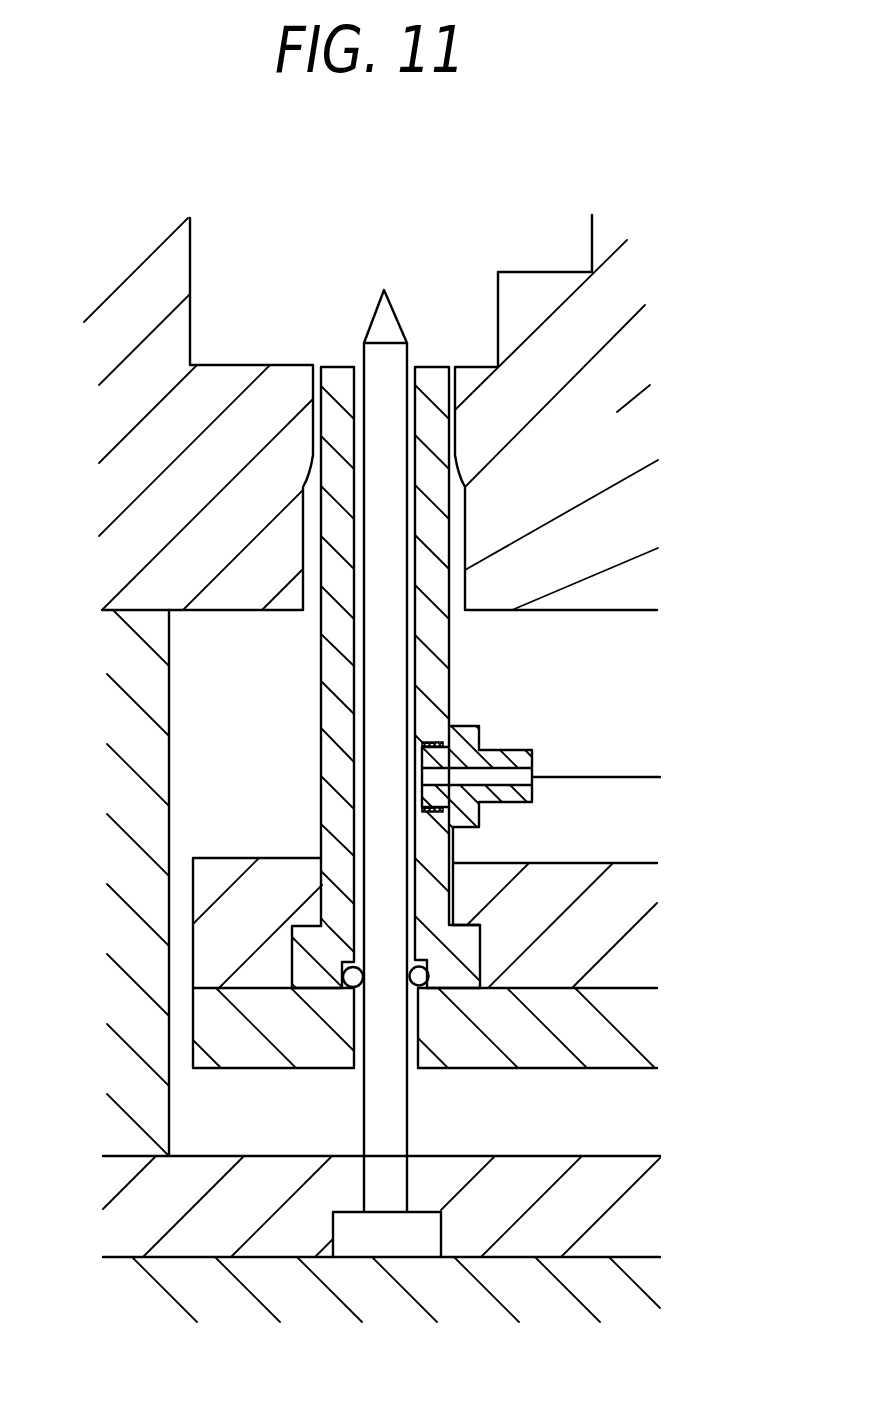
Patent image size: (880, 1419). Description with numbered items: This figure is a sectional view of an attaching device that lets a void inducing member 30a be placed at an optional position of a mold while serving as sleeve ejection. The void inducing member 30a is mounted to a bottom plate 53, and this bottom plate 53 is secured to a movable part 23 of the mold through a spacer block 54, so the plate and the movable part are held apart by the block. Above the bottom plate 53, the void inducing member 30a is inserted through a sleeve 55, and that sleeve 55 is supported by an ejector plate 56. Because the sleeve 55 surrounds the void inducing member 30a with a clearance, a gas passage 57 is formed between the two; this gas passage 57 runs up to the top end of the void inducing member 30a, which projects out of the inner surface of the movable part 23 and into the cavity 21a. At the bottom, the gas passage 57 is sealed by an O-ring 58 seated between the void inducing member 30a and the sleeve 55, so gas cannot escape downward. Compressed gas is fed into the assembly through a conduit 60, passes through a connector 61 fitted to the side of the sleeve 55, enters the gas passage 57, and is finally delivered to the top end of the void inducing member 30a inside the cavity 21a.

The cavity 21a is at (208, 407).
The movable part 23 is at (617, 407).
The void inducing member 30a is at (403, 342).
The bottom plate 53 is at (605, 1228).
The spacer block 54 is at (150, 833).
The sleeve 55 is at (321, 768).
The ejector plate 56 is at (602, 1033).
The gas passage 57 is at (360, 650).
The O-ring 58 is at (423, 990).
The conduit 60 is at (620, 777).
The connector 61 is at (512, 748).